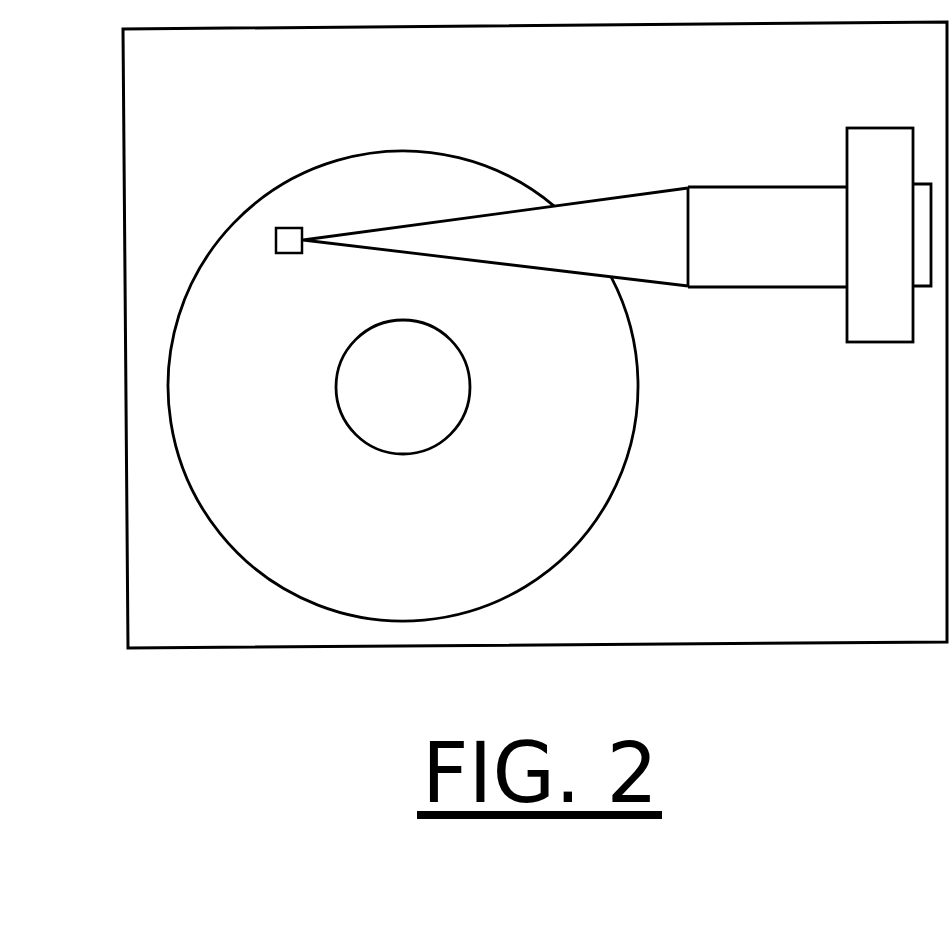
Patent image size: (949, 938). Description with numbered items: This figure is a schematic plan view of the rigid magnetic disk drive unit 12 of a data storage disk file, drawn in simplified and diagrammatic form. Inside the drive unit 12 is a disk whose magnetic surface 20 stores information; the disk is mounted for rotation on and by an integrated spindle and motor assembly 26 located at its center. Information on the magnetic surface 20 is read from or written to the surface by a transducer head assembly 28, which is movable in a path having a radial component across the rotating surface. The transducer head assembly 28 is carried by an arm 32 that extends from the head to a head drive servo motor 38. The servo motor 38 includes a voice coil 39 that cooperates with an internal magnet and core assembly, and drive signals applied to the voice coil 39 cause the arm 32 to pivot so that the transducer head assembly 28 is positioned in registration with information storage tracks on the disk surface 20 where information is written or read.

The rigid magnetic disk drive unit 12 is at (868, 573).
The magnetic surface 20 is at (458, 543).
The integrated spindle and motor assembly 26 is at (403, 387).
The transducer head assembly 28 is at (290, 240).
The arm 32 is at (495, 237).
The head drive servo motor 38 is at (767, 237).
The voice coil 39 is at (889, 235).